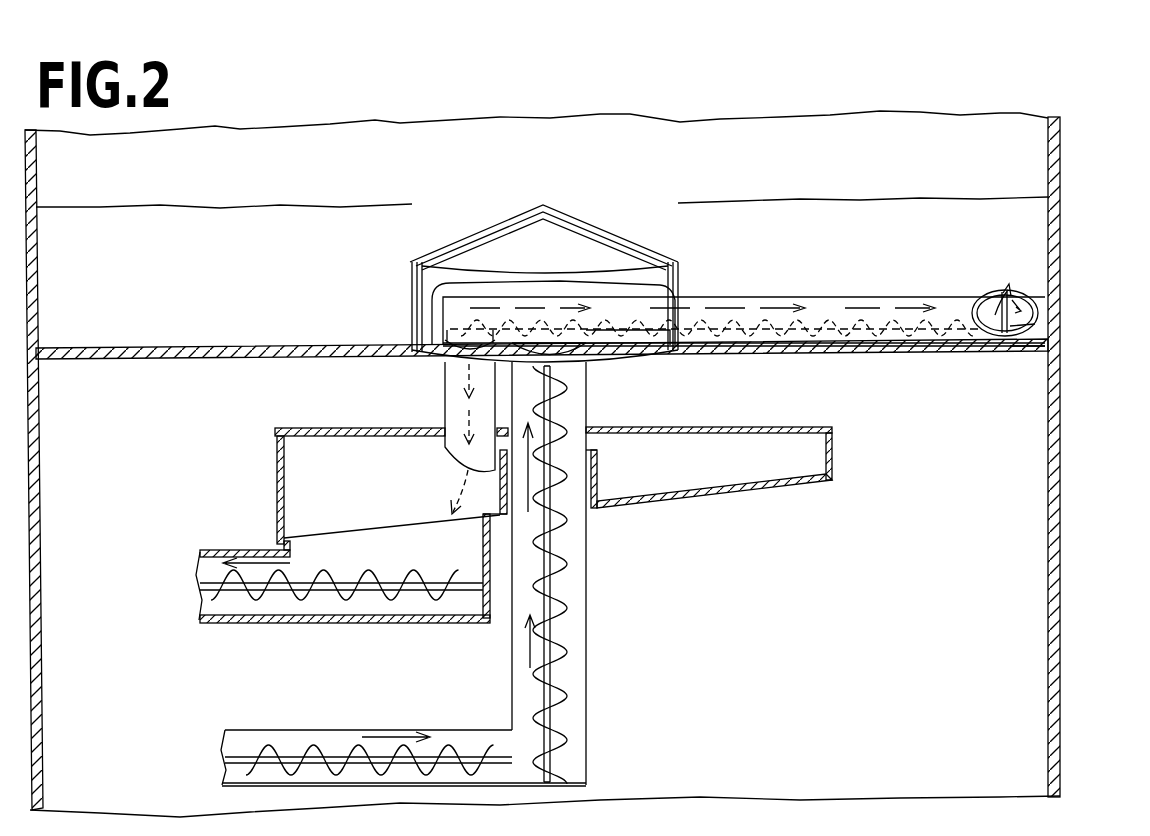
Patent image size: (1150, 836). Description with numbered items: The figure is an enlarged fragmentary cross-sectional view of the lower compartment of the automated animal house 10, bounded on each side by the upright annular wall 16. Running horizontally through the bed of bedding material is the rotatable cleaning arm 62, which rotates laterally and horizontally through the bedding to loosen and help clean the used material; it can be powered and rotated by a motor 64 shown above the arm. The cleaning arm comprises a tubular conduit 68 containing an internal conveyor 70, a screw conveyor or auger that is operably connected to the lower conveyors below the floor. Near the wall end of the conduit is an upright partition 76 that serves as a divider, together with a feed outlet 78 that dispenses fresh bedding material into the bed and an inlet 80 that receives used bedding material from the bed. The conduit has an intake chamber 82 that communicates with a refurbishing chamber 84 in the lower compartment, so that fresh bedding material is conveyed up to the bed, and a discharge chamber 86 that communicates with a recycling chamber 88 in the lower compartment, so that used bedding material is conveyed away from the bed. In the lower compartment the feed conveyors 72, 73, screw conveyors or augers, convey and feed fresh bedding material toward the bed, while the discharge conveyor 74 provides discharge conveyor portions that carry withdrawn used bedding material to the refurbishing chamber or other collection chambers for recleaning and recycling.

The automated animal house 10 is at (1076, 579).
The annular wall 16 is at (1061, 456).
The cleaning arm 62 is at (914, 340).
The motor 64 is at (556, 230).
The tubular conduit 68 is at (822, 306).
The internal conveyor 70 is at (782, 332).
The feed conveyor 72 is at (545, 623).
The feed conveyor 73 is at (312, 745).
The discharge conveyor 74 is at (323, 580).
The partition 76 is at (1030, 342).
The feed outlet 78 is at (985, 300).
The inlet 80 is at (1035, 325).
The intake chamber 82 is at (703, 301).
The refurbishing chamber 84 is at (572, 415).
The discharge chamber 86 is at (447, 336).
The recycling chamber 88 is at (413, 540).